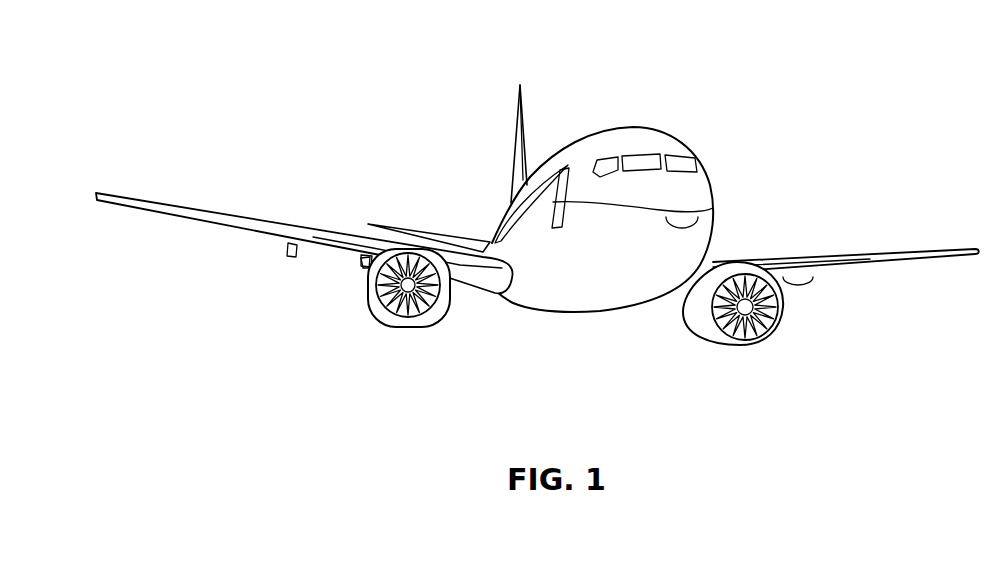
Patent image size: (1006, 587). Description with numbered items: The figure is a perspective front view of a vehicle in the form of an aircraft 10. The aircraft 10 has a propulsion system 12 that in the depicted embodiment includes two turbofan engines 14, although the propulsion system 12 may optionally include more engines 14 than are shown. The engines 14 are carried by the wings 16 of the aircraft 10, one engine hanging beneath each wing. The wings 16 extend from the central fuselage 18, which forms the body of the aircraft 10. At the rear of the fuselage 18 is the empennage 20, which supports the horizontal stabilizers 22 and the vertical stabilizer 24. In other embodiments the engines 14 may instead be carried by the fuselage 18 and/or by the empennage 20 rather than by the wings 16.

The aircraft 10 is at (537, 222).
The propulsion system 12 is at (537, 252).
The turbofan engines 14 is at (408, 327).
The wings 16 is at (215, 218).
The fuselage 18 is at (708, 212).
The empennage 20 is at (510, 207).
The horizontal stabilizers 22 is at (398, 227).
The vertical stabilizer 24 is at (517, 120).